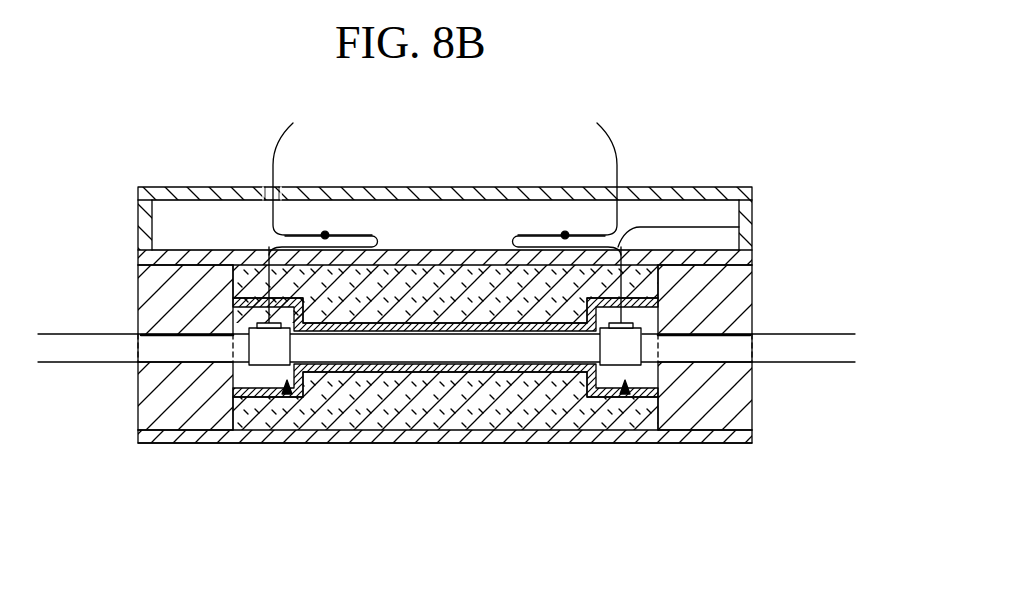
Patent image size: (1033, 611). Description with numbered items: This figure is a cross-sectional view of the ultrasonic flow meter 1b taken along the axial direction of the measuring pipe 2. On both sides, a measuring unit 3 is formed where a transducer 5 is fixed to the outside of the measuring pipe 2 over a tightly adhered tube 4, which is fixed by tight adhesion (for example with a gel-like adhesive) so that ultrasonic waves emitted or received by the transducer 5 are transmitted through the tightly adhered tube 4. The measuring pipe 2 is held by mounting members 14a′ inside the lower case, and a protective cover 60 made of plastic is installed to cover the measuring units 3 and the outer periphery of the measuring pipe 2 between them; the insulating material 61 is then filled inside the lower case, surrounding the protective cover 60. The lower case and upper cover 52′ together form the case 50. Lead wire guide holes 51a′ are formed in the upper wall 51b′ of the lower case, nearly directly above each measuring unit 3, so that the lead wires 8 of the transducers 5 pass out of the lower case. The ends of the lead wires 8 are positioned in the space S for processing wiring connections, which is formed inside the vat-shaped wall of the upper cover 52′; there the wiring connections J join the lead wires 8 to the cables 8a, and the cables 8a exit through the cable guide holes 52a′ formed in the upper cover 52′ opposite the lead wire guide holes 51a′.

The ultrasonic flow meter 1b is at (475, 495).
The measuring pipe 2 is at (822, 348).
The measuring unit 3 is at (290, 394).
The tightly adhered tube 4 is at (268, 355).
The transducer 5 is at (257, 324).
The lead wire 8 is at (373, 236).
The cable 8a is at (282, 127).
The housing block 14a′ is at (160, 413).
The base 50 is at (133, 418).
The lead wire guide hole 51a′ is at (265, 247).
The upper wall 51b′ is at (750, 255).
The upper cover 52′ is at (140, 189).
The cable guide hole 52a′ is at (264, 188).
The protective cover 60 is at (252, 395).
The insulating material 61 is at (402, 423).
The wiring connection J is at (327, 232).
The space for processing wiring connections S is at (692, 212).